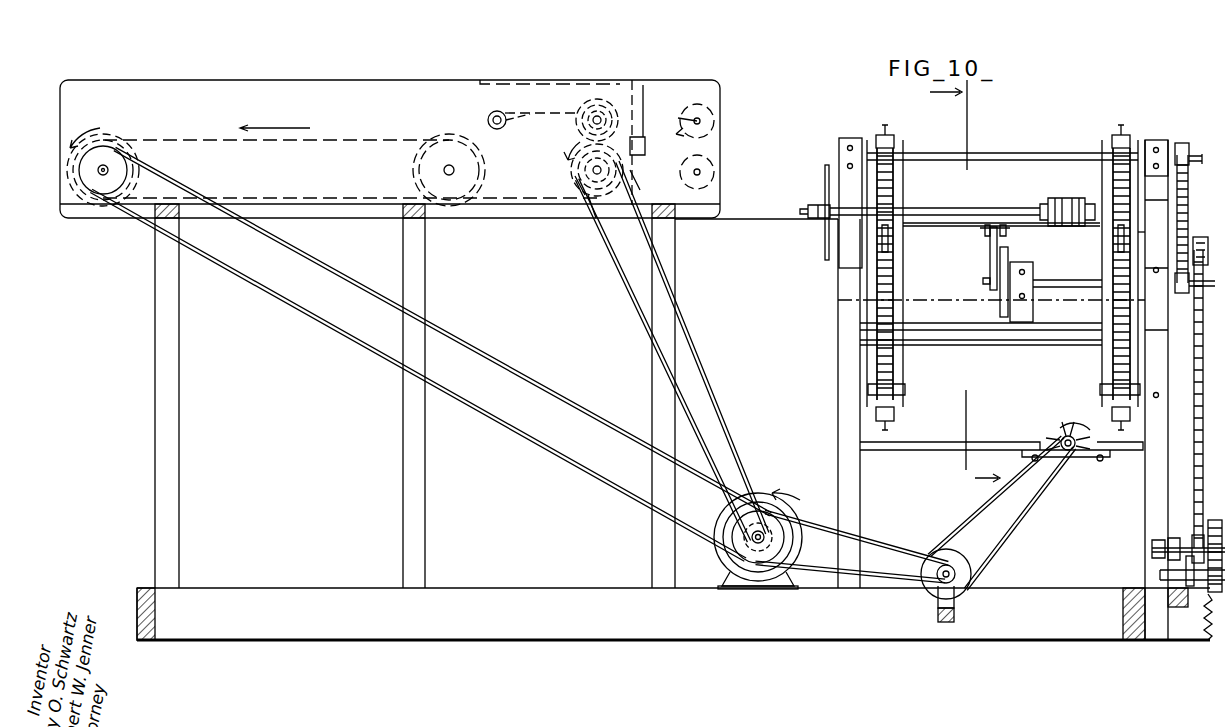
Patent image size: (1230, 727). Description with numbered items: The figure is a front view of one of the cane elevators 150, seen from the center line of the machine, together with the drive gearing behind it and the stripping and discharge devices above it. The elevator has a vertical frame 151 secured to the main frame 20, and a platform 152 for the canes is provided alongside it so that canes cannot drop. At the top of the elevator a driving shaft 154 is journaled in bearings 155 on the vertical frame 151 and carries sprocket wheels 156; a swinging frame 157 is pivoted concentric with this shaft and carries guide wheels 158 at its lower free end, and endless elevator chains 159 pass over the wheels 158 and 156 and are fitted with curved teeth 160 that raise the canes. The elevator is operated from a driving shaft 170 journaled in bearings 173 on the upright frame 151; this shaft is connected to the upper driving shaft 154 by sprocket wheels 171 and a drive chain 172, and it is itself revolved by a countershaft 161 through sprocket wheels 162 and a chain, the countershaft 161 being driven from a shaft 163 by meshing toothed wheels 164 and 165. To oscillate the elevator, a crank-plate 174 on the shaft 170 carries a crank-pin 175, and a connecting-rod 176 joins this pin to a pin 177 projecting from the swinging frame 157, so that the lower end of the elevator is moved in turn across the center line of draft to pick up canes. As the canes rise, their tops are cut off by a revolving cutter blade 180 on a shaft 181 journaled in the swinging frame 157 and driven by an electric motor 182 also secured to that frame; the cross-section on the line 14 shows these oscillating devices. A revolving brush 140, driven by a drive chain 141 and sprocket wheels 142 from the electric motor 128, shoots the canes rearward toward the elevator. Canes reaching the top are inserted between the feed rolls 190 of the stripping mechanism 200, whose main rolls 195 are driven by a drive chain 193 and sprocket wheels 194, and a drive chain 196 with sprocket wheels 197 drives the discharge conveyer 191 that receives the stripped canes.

The section line 14 is at (965, 282).
The main frame 20 is at (552, 640).
The electric motor 128 is at (722, 556).
The revolving brush 140 is at (1063, 428).
The drive chain 141 is at (975, 512).
The sprocket wheels 142 is at (803, 556).
The elevator 150 is at (991, 333).
The vertical frame 151 is at (1180, 498).
The platform 152 is at (940, 450).
The driving shaft 154 is at (1005, 150).
The bearings 155 is at (1155, 138).
The sprocket wheels 156 is at (1108, 142).
The swinging frame 157 is at (1042, 338).
The guide wheels 158 is at (1102, 392).
The elevator chains 159 is at (1122, 340).
The curved teeth 160 is at (896, 428).
The countershaft 161 is at (1150, 548).
The sprocket wheels 162 is at (1188, 556).
The shaft 163 is at (1194, 590).
The toothed wheel 164 is at (1220, 498).
The toothed wheel 165 is at (1204, 625).
The driving shaft 170 is at (1068, 284).
The sprocket wheels 171 is at (1178, 290).
The drive chain 172 is at (1142, 234).
The bearings 173 is at (1040, 300).
The crank-plate 174 is at (1000, 304).
The crank-pin 175 is at (983, 281).
The connecting-rod 176 is at (990, 252).
The pin 177 is at (982, 230).
The revolving cutter blade 180 is at (823, 248).
The shaft 181 is at (932, 205).
The electric motor 182 is at (1062, 200).
The feed rolls 190 is at (712, 162).
The discharge conveyer 191 is at (322, 136).
The drive chain 193 is at (634, 312).
The sprocket wheels 194 is at (792, 520).
The main rolls 195 is at (586, 208).
The drive chain 196 is at (360, 328).
The sprocket wheels 197 is at (128, 170).
The stripping mechanism 200 is at (645, 125).